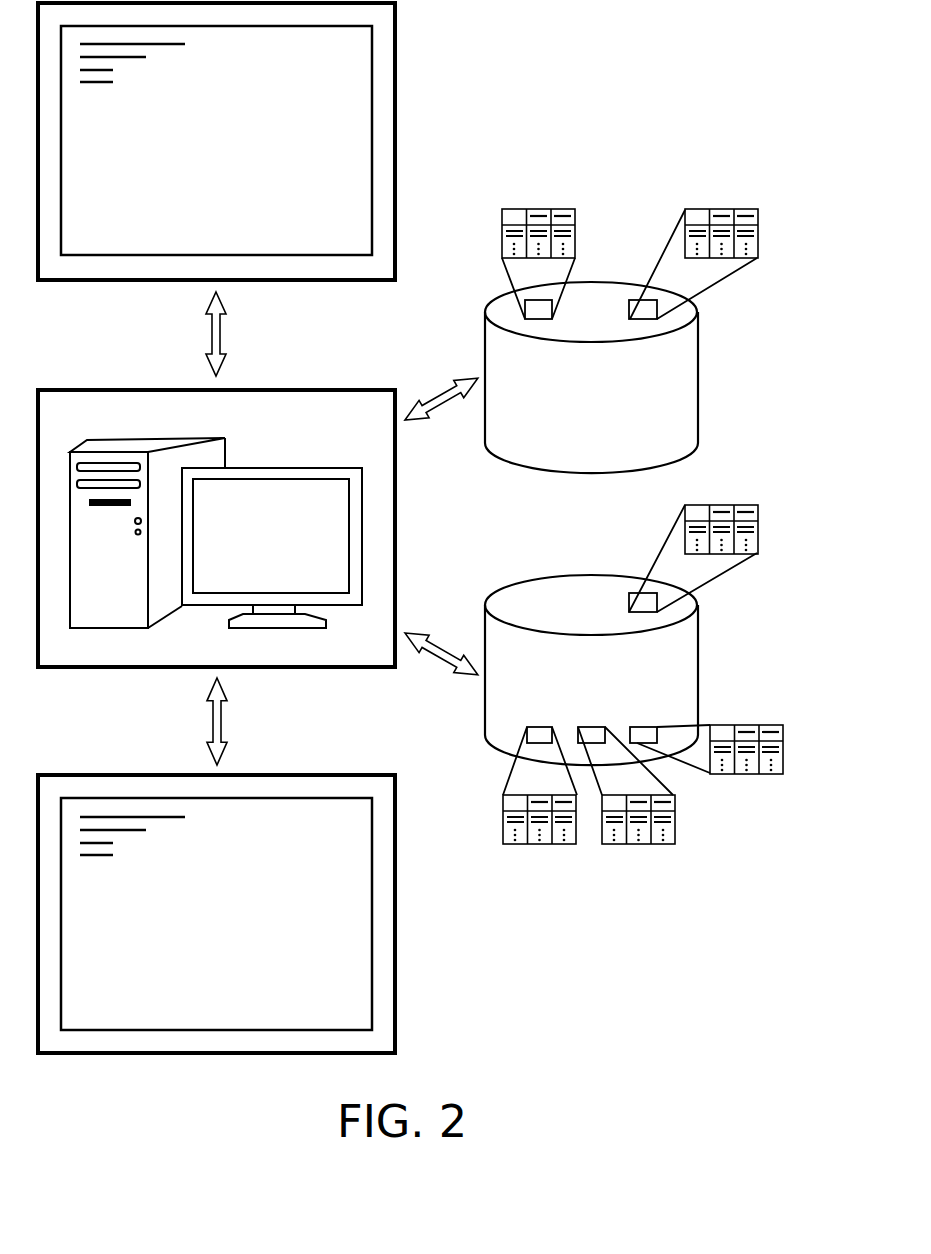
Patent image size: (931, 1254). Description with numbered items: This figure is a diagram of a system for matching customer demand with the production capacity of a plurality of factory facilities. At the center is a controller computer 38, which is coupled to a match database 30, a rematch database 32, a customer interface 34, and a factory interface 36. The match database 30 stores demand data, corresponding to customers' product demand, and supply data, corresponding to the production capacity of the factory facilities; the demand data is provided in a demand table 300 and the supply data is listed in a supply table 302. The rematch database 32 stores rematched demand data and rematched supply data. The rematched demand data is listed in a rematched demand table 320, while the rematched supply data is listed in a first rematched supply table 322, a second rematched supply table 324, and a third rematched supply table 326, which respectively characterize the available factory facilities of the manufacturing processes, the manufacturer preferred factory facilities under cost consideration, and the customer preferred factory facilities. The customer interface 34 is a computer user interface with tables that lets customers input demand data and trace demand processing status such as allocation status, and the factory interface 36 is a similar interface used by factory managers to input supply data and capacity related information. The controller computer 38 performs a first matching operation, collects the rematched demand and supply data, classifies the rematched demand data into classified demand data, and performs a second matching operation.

The match database 30 is at (698, 375).
The rematch database 32 is at (698, 630).
The customer interface 34 is at (395, 913).
The factory interface 36 is at (396, 138).
The controller computer 38 is at (357, 390).
The demand table 300 is at (566, 209).
The supply table 302 is at (716, 209).
The rematched demand table 320 is at (725, 505).
The first rematched supply table 322 is at (747, 724).
The second rematched supply table 324 is at (665, 843).
The third rematched supply table 326 is at (567, 843).